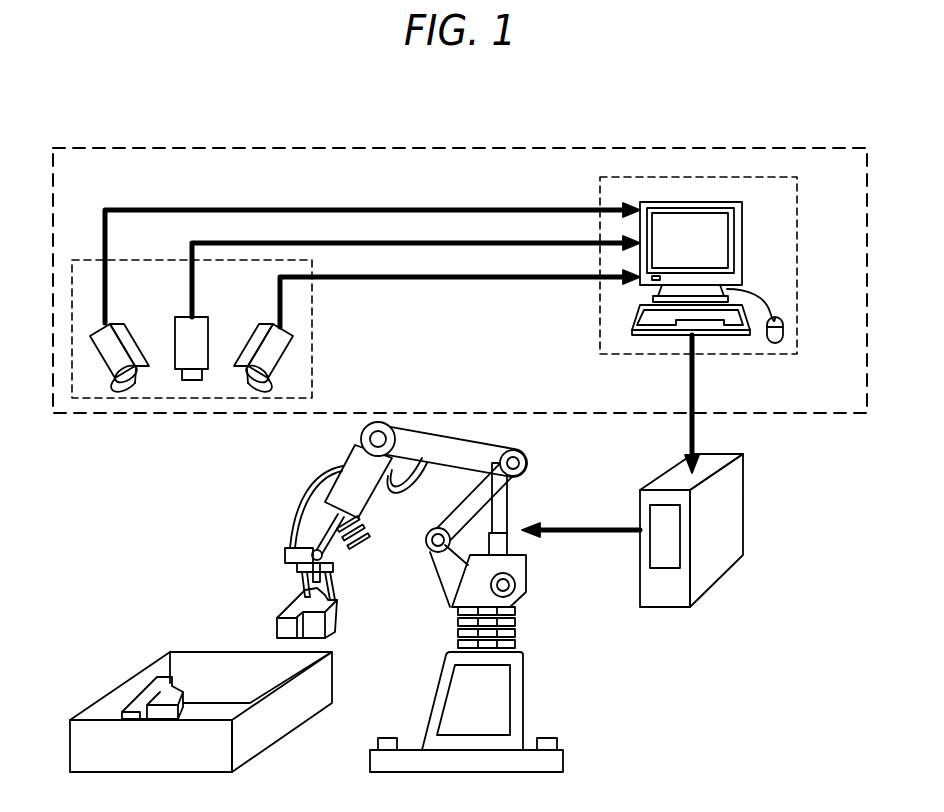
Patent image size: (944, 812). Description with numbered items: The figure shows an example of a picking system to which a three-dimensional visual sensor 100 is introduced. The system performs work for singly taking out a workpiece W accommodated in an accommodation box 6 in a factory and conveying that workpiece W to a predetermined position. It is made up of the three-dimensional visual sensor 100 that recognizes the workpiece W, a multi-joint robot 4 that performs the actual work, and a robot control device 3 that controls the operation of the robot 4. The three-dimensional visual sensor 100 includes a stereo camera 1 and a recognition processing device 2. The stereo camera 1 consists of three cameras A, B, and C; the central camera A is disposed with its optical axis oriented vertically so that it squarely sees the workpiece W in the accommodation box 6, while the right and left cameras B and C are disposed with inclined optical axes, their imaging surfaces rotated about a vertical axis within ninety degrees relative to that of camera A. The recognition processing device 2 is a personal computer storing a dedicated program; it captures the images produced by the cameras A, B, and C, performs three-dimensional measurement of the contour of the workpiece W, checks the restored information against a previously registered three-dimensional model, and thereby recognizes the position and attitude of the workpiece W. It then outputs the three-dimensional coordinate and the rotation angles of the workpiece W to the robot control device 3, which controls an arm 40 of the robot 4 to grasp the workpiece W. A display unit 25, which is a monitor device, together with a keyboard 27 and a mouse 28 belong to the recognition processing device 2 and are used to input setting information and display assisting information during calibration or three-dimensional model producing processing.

The three-dimensional visual sensor 100 is at (725, 149).
The stereo camera 1 is at (312, 327).
The central camera A is at (208, 327).
The left camera B is at (118, 332).
The right camera C is at (255, 327).
The recognition processing device 2 is at (697, 283).
The display unit 25 is at (723, 240).
The keyboard 27 is at (647, 315).
The mouse 28 is at (775, 343).
The robot control device 3 is at (732, 507).
The multi-joint robot 4 is at (452, 597).
The arm 40 is at (497, 441).
The accommodation box 6 is at (213, 650).
The workpiece W is at (337, 618).